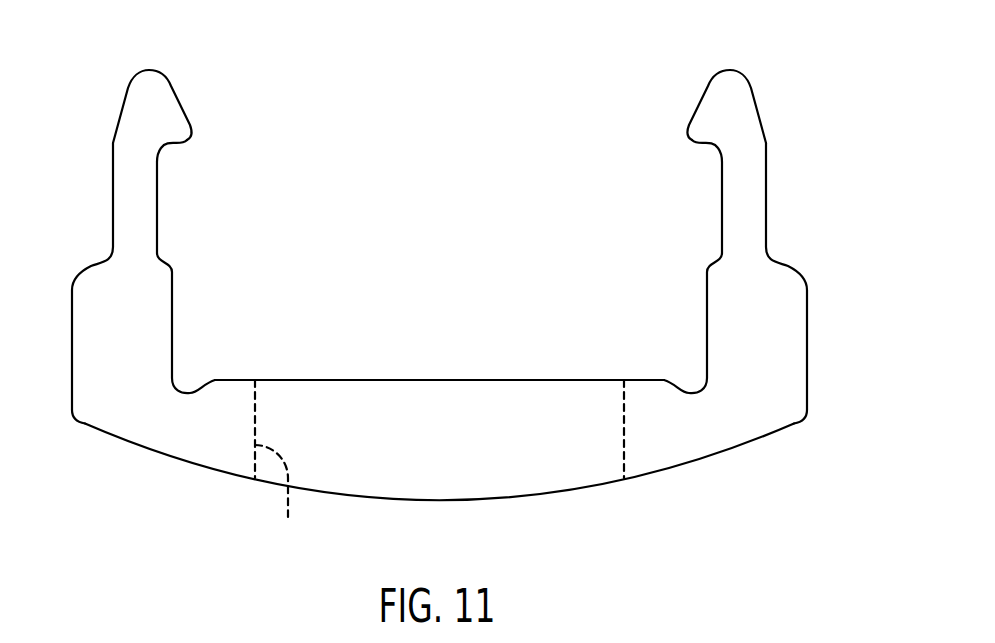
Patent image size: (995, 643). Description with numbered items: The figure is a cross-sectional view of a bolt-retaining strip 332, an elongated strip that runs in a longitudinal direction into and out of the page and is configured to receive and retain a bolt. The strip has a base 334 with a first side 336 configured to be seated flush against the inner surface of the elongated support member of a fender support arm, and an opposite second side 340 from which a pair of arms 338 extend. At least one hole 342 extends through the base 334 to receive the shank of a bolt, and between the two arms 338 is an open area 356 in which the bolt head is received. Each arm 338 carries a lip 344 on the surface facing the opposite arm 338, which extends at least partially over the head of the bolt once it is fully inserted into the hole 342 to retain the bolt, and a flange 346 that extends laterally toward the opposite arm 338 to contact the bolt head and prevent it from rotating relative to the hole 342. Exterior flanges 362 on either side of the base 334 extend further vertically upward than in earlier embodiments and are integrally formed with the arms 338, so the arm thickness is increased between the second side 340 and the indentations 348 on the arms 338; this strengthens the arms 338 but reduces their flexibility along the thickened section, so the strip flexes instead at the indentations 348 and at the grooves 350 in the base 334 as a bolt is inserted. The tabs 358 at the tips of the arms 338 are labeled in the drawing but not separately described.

The bolt-retaining strip 332 is at (87, 113).
The base 334 is at (538, 473).
The first side 336 is at (358, 500).
The arm 338 is at (127, 200).
The second side 340 is at (343, 377).
The hole 342 is at (439, 463).
The lip 344 is at (187, 141).
The flange 346 is at (172, 307).
The indentation 348 is at (158, 204).
The groove 350 is at (189, 392).
The open area 356 is at (437, 257).
The retaining tab 358 is at (180, 102).
The exterior flange 362 is at (83, 377).